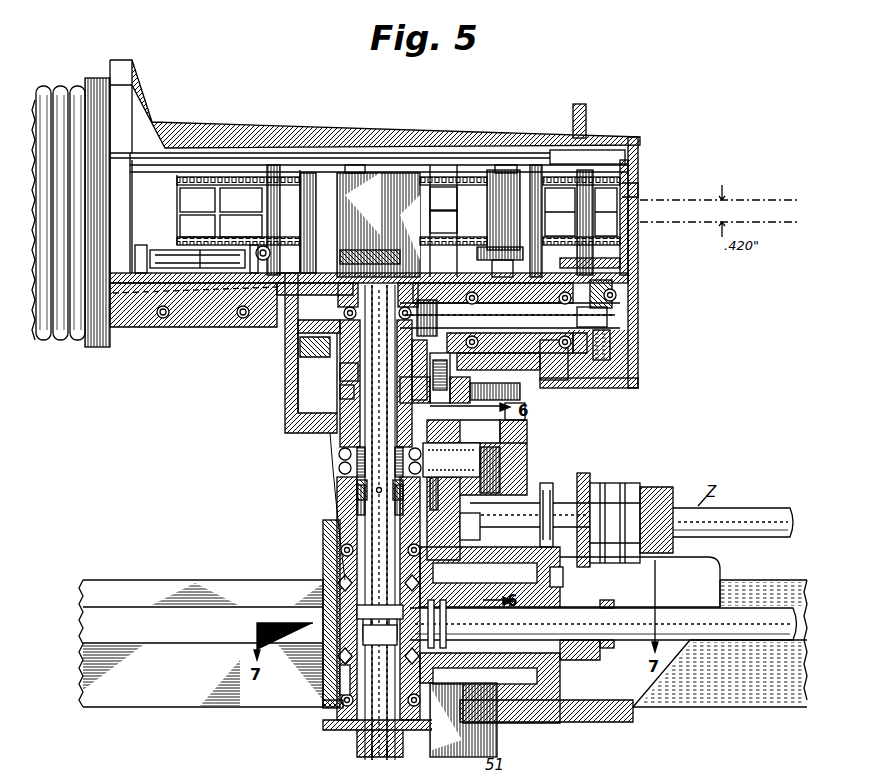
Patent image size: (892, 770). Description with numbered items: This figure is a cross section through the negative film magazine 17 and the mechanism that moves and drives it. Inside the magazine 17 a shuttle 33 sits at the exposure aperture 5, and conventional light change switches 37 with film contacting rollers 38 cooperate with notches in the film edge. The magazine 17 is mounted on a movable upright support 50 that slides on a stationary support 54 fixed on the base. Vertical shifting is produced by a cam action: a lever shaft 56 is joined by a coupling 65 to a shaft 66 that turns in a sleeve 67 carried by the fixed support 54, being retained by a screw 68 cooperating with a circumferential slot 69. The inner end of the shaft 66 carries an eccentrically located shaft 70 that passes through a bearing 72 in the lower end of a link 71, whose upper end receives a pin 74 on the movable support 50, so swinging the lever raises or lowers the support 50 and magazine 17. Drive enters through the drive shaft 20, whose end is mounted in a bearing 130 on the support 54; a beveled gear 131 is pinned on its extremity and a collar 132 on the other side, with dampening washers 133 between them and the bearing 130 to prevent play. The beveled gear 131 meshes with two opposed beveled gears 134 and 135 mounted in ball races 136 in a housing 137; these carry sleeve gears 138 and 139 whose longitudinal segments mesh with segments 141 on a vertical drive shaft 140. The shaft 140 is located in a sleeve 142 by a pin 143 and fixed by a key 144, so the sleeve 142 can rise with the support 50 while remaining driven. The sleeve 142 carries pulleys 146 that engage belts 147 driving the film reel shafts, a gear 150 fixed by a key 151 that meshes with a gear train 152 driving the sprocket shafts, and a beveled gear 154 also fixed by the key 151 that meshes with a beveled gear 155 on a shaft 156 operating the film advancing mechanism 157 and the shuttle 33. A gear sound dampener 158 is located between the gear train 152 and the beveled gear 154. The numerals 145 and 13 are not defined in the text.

The negative film magazine 17 is at (494, 136).
The shuttle 33 is at (612, 152).
The exposure aperture 5 is at (633, 190).
The film advancing mechanism 157 is at (616, 297).
The bearing 145 is at (344, 315).
The beveled gear 155 is at (432, 300).
The shaft 156 is at (510, 318).
The beveled gear 154 is at (280, 372).
The key 151 is at (345, 372).
The gear 150 is at (344, 396).
The movable upright support 50 is at (287, 398).
The gear train 152 is at (470, 378).
The gear sound dampener 158 is at (485, 377).
The key 144 is at (520, 420).
The carrier hub 13 is at (505, 445).
The stationary support 54 is at (522, 470).
The link 71 is at (528, 462).
The screw 68 is at (547, 483).
The sleeve 67 is at (583, 473).
The shaft 66 is at (598, 495).
The coupling 65 is at (657, 488).
The shaft 56 is at (750, 508).
The pin 74 is at (451, 460).
The bearing 72 is at (551, 514).
The eccentrically located shaft 70 is at (470, 526).
The pulleys 146 is at (338, 452).
The belts 147 is at (340, 468).
The sleeve 142 is at (352, 490).
The pin 143 is at (357, 507).
The ball races 136 is at (340, 549).
The sleeve gear 138 is at (322, 580).
The beveled gear 134 is at (338, 578).
The segments 141 is at (326, 612).
The sleeve gear 139 is at (337, 636).
The housing 137 is at (325, 672).
The beveled gear 135 is at (322, 708).
The vertical drive shaft 140 is at (353, 735).
The beveled gear 131 is at (450, 744).
The dampening washers 133 is at (463, 653).
The bearing 130 is at (573, 660).
The collar 132 is at (607, 648).
The circumferential slot 69 is at (563, 577).
The drive shaft 20 is at (755, 606).
The light change switches 37 is at (192, 272).
The film contacting rollers 38 is at (262, 262).